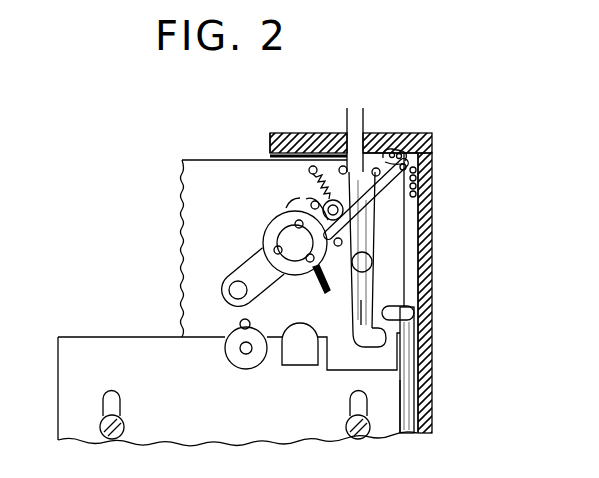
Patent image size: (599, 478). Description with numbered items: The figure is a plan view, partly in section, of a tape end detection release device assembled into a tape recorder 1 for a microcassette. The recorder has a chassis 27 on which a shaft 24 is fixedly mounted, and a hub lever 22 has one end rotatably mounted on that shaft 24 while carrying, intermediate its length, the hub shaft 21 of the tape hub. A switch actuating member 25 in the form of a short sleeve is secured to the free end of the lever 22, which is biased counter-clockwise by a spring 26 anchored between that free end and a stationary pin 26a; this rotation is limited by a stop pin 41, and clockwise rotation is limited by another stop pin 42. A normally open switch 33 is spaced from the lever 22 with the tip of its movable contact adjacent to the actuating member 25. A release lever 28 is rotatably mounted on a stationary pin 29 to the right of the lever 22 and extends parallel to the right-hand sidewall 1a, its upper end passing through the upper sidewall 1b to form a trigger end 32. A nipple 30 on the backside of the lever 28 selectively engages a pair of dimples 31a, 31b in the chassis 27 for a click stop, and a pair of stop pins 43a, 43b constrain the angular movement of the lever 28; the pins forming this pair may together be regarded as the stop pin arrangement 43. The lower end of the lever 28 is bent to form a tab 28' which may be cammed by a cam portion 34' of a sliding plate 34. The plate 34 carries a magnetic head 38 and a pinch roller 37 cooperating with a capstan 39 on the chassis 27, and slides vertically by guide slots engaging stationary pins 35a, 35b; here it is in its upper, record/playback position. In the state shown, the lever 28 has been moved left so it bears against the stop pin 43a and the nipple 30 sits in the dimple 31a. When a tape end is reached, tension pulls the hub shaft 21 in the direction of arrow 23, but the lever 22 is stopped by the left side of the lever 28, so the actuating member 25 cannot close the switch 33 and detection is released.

The tape recorder 1 is at (440, 147).
The right-hand sidewall 1a is at (426, 229).
The upper sidewall 1b is at (270, 142).
The hub shaft 21 is at (288, 234).
The hub lever 22 is at (258, 260).
The arrow 23 is at (313, 273).
The shaft 24 is at (234, 282).
The switch actuating member 25 is at (311, 205).
The spring 26 is at (318, 185).
The stationary pin 26a is at (313, 166).
The chassis 27 is at (405, 267).
The release lever 28 is at (383, 302).
The tab 28' is at (427, 370).
The stationary pin 29 is at (370, 258).
The nipple 30 is at (383, 148).
The dimple 31a is at (395, 163).
The dimple 31b is at (376, 168).
The trigger end 32 is at (354, 108).
The switch 33 is at (421, 166).
The sliding plate 34 is at (432, 406).
The cam portion 34' is at (426, 315).
The stationary pin 35a is at (346, 428).
The stationary pin 35b is at (124, 428).
The pinch roller 37 is at (240, 366).
The magnetic head 38 is at (292, 366).
The capstan 39 is at (240, 324).
The stop pin 41 is at (323, 205).
The stop pin 42 is at (338, 246).
The lever 43 is at (366, 199).
The stop pin 43a is at (343, 166).
The stop pin 43b is at (398, 151).